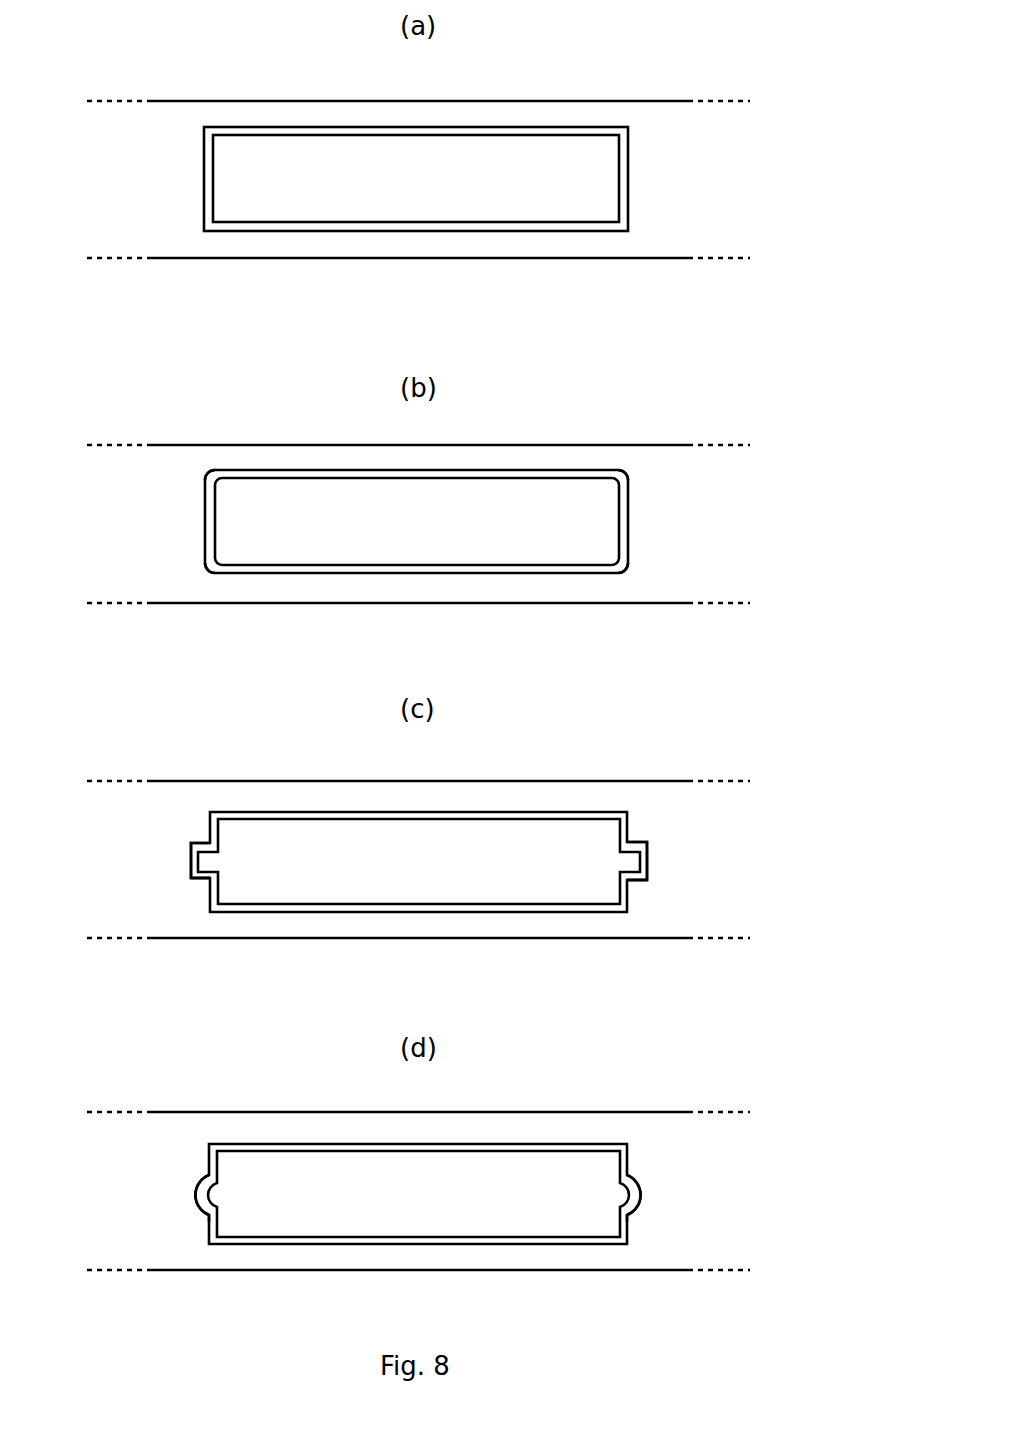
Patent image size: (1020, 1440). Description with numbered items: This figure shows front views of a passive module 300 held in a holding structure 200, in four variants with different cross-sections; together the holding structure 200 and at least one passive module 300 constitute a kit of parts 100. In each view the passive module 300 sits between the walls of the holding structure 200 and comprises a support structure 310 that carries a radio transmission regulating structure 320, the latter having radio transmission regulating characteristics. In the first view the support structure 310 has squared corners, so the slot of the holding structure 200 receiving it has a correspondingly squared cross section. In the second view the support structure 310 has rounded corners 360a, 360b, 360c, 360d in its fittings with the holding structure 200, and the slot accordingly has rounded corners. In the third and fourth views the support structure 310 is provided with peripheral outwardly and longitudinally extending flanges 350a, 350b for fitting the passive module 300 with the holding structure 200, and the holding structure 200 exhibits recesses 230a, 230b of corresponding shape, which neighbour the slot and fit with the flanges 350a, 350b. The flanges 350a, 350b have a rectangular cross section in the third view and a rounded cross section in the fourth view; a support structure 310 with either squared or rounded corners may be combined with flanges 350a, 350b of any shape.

The kit of parts 100 is at (754, 66).
The holding structure 200 is at (556, 116).
The passive module 300 is at (590, 192).
The support structure 310 is at (258, 128).
The radio transmission regulating structure 320 is at (343, 170).
The rounded corner 360a is at (212, 471).
The rounded corner 360b is at (618, 470).
The rounded corner 360c is at (213, 572).
The rounded corner 360d is at (618, 573).
The flange 350a is at (193, 842).
The flange 350b is at (647, 840).
The recess 230a is at (198, 883).
The recess 230b is at (652, 887).